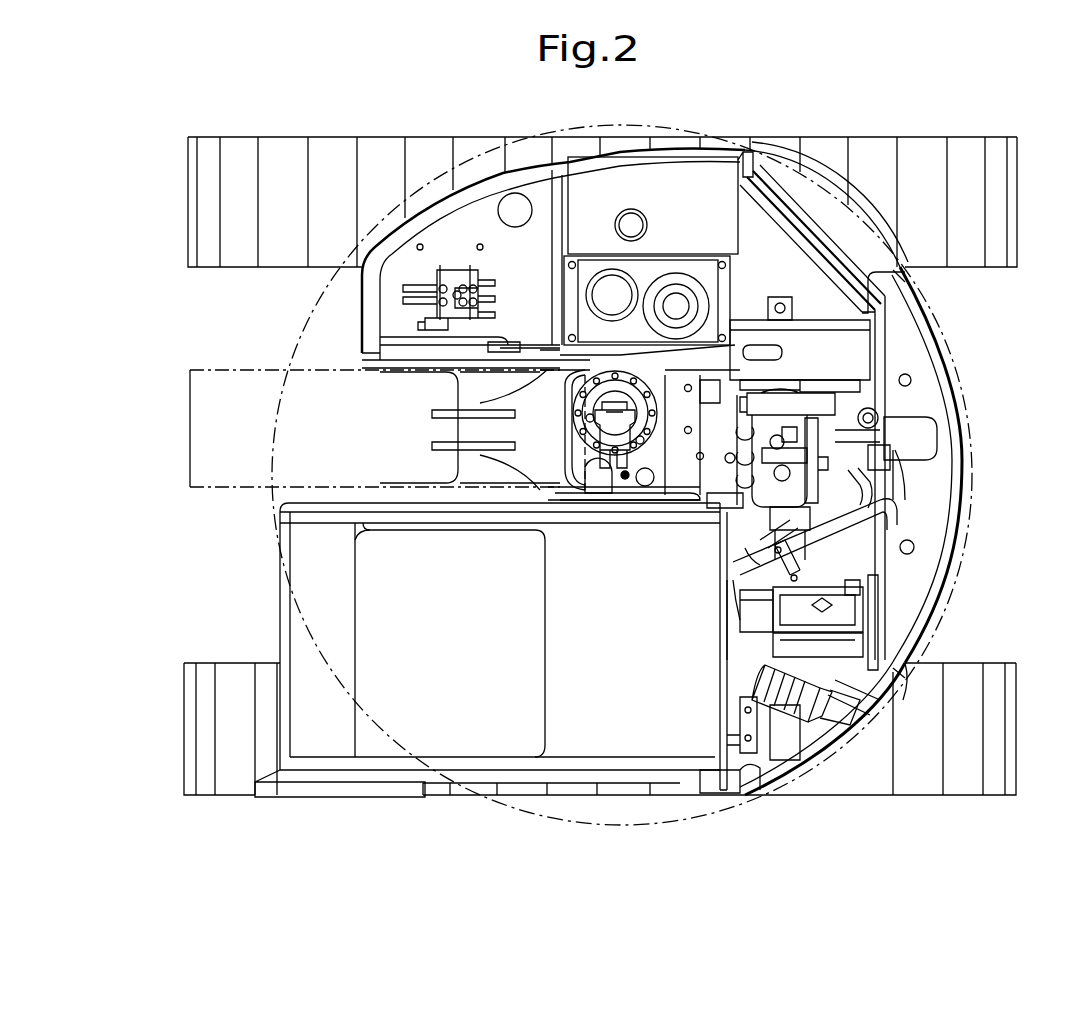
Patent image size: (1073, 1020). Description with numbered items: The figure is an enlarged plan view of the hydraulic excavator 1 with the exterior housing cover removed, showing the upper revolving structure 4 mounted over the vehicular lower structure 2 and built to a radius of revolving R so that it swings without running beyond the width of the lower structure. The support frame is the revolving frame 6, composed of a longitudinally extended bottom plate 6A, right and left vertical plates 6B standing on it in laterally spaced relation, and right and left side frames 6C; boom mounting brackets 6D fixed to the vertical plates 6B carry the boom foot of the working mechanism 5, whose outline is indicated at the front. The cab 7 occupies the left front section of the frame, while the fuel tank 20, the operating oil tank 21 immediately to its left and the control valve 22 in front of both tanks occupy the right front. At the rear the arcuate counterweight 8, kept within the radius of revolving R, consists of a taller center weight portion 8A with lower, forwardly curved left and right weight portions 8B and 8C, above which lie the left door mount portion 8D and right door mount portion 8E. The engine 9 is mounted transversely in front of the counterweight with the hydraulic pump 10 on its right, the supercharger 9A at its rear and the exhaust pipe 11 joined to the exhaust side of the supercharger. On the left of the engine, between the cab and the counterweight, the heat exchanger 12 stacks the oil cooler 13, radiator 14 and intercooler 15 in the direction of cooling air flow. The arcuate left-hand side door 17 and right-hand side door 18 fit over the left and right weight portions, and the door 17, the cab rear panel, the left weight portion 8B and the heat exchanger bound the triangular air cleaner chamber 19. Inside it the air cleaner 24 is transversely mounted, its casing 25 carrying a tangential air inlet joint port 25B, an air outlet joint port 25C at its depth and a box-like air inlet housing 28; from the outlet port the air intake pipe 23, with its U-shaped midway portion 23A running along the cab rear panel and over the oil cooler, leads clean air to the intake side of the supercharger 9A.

The hydraulic excavator 1 is at (262, 607).
The vehicular lower structure 2 is at (289, 160).
The upper revolving structure 4 is at (350, 348).
The working mechanism 5 is at (228, 487).
The revolving frame 6 is at (434, 182).
The bottom plate 6A is at (530, 345).
The vertical plates 6B is at (505, 366).
The side frames 6C is at (473, 192).
The boom mounting brackets 6D is at (432, 414).
The cab 7 is at (490, 772).
The counterweight 8 is at (950, 405).
The center weight portion 8A is at (905, 492).
The left weight portion 8B is at (718, 760).
The right weight portion 8C is at (900, 290).
The left door mount portion 8D is at (915, 690).
The right door mount portion 8E is at (898, 270).
The engine 9 is at (865, 520).
The supercharger 9A is at (870, 478).
The hydraulic pump 10 is at (780, 297).
The exhaust pipe 11 is at (860, 350).
The heat exchanger 12 is at (882, 620).
The oil cooler 13 is at (757, 623).
The radiator 14 is at (862, 585).
The intercooler 15 is at (850, 645).
The left-hand side door 17 is at (848, 720).
The right-hand side door 18 is at (810, 185).
The air cleaner chamber 19 is at (910, 700).
The fuel tank 20 is at (605, 180).
The operating oil tank 21 is at (683, 265).
The control valve 22 is at (420, 285).
The air intake pipe 23 is at (890, 553).
The midway portion 23A is at (730, 638).
The air cleaner 24 is at (822, 705).
The casing 25 is at (850, 735).
The air inlet joint port 25B is at (785, 720).
The air outlet joint port 25C is at (720, 745).
The air inlet housing 28 is at (760, 720).
The radius of revolving R is at (318, 305).